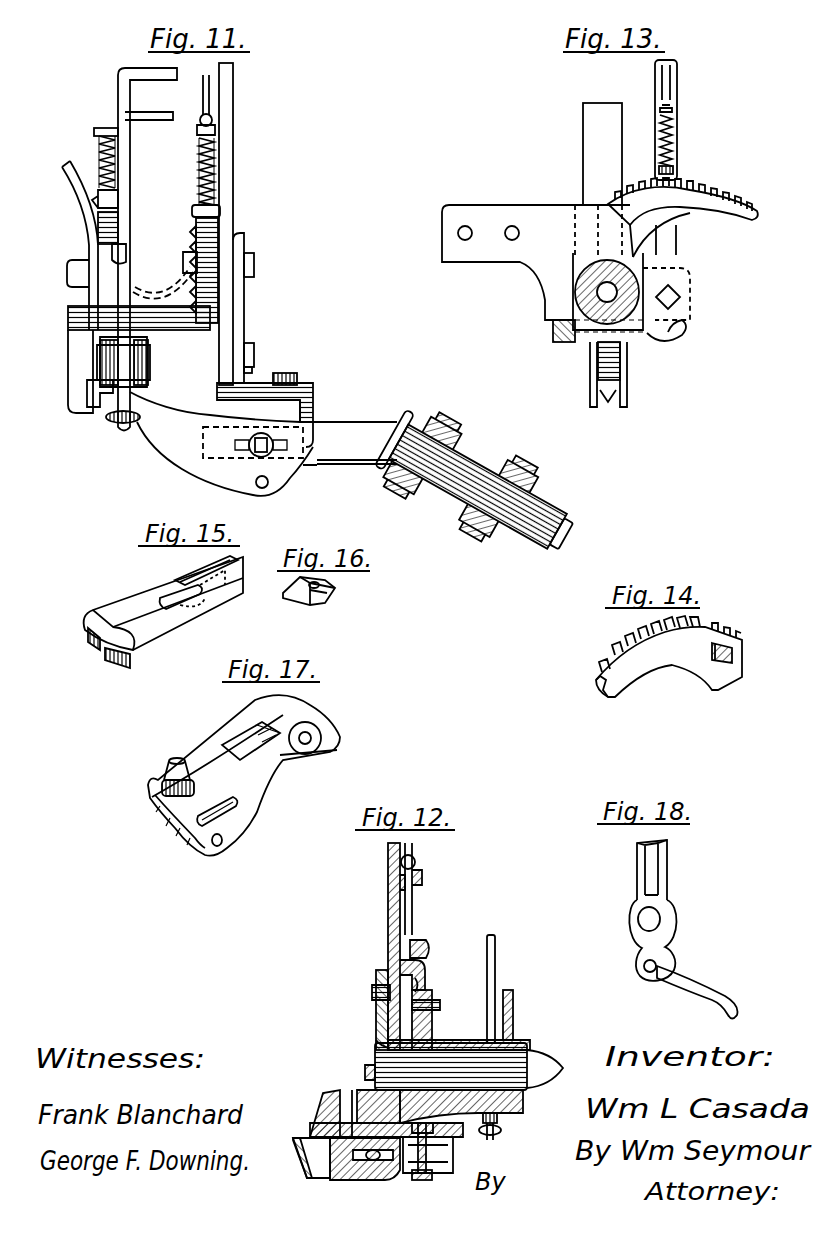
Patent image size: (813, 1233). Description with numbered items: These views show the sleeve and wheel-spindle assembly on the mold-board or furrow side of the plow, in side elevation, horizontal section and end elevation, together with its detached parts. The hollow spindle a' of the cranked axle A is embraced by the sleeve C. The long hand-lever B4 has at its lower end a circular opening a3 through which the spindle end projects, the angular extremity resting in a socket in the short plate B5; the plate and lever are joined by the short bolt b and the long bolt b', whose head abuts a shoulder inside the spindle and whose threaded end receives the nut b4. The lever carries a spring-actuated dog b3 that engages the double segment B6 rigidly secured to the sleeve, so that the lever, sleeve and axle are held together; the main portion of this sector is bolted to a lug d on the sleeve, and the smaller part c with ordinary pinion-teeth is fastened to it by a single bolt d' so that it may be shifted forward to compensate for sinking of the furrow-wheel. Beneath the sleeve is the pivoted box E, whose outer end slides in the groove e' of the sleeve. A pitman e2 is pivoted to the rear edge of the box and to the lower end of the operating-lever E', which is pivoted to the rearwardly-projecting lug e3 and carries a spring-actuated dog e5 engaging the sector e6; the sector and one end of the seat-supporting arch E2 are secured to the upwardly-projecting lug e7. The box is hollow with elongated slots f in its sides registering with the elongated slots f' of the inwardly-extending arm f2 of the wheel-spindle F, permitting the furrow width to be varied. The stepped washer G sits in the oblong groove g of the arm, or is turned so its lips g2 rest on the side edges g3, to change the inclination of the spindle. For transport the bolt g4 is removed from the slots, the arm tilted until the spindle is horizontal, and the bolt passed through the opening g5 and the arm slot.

In FIG. 13, the crank A is at (640, 282).
In FIG. 12, the crank A is at (573, 1055).
In FIG. 12, the spindle a' is at (469, 1066).
In FIG. 12, the circular opening a3 is at (376, 1040).
In FIG. 11, the hand-lever B4 is at (233, 183).
In FIG. 12, the hand-lever B4 is at (388, 905).
In FIG. 11, the short plate B5 is at (244, 300).
In FIG. 12, the short plate B5 is at (376, 1010).
In FIG. 11, the double segment B6 is at (200, 312).
In FIG. 12, the double segment B6 is at (425, 975).
In FIG. 11, the short bolt b is at (255, 265).
In FIG. 12, the short bolt b is at (375, 979).
In FIG. 11, the long bolt b' is at (262, 348).
In FIG. 12, the spring-actuated dog b3 is at (426, 950).
In FIG. 11, the nut b4 is at (252, 368).
In FIG. 12, the nut b4 is at (365, 1072).
In FIG. 11, the sleeve C is at (139, 359).
In FIG. 12, the sleeve C is at (420, 1082).
In FIG. 11, the sector part with pinion-teeth c is at (297, 378).
In FIG. 12, the sector part with pinion-teeth c is at (375, 1055).
In FIG. 11, the lug d is at (163, 282).
In FIG. 12, the lug d is at (434, 1020).
In FIG. 11, the bolt d' is at (191, 174).
In FIG. 12, the bolt d' is at (437, 996).
In FIG. 11, the box E is at (221, 444).
In FIG. 13, the box E is at (616, 374).
In FIG. 17, the box E is at (244, 775).
In FIG. 12, the box E is at (370, 1170).
In FIG. 11, the operating-lever E' is at (147, 249).
In FIG. 13, the operating-lever E' is at (680, 157).
In FIG. 12, the operating-lever E' is at (500, 989).
In FIG. 18, the operating-lever E' is at (664, 910).
In FIG. 11, the seat-supporting arch E2 is at (62, 170).
In FIG. 11, the groove e' is at (76, 410).
In FIG. 12, the groove e' is at (514, 1124).
In FIG. 11, the pitman e2 is at (110, 423).
In FIG. 13, the pitman e2 is at (662, 343).
In FIG. 12, the pitman e2 is at (500, 1133).
In FIG. 18, the pitman e2 is at (705, 992).
In FIG. 13, the rearwardly-projecting lug e3 is at (666, 294).
In FIG. 11, the spring-actuated dog e5 is at (118, 198).
In FIG. 13, the spring-actuated dog e5 is at (677, 150).
In FIG. 11, the sector e6 is at (118, 228).
In FIG. 13, the sector e6 is at (705, 206).
In FIG. 14, the sector e6 is at (669, 656).
In FIG. 11, the upwardly-projecting lug e7 is at (78, 260).
In FIG. 11, the wheel-spindle F is at (478, 486).
In FIG. 15, the wheel-spindle F is at (163, 614).
In FIG. 11, the elongated slots f is at (253, 442).
In FIG. 17, the elongated slots f is at (229, 814).
In FIG. 12, the elongated slots f is at (331, 1184).
In FIG. 15, the elongated slots f' is at (192, 597).
In FIG. 11, the inwardly-extending arm f2 is at (348, 443).
In FIG. 15, the inwardly-extending arm f2 is at (117, 585).
In FIG. 12, the inwardly-extending arm f2 is at (300, 1160).
In FIG. 16, the stepped washer G is at (325, 583).
In FIG. 15, the oblong groove g is at (230, 558).
In FIG. 12, the oblong groove g is at (453, 1145).
In FIG. 16, the lips g2 is at (320, 600).
In FIG. 15, the side edges g3 is at (190, 578).
In FIG. 12, the side edges g3 is at (432, 1175).
In FIG. 11, the bolt g4 is at (258, 450).
In FIG. 12, the bolt g4 is at (373, 1160).
In FIG. 11, the opening g5 is at (265, 488).
In FIG. 17, the opening g5 is at (215, 846).